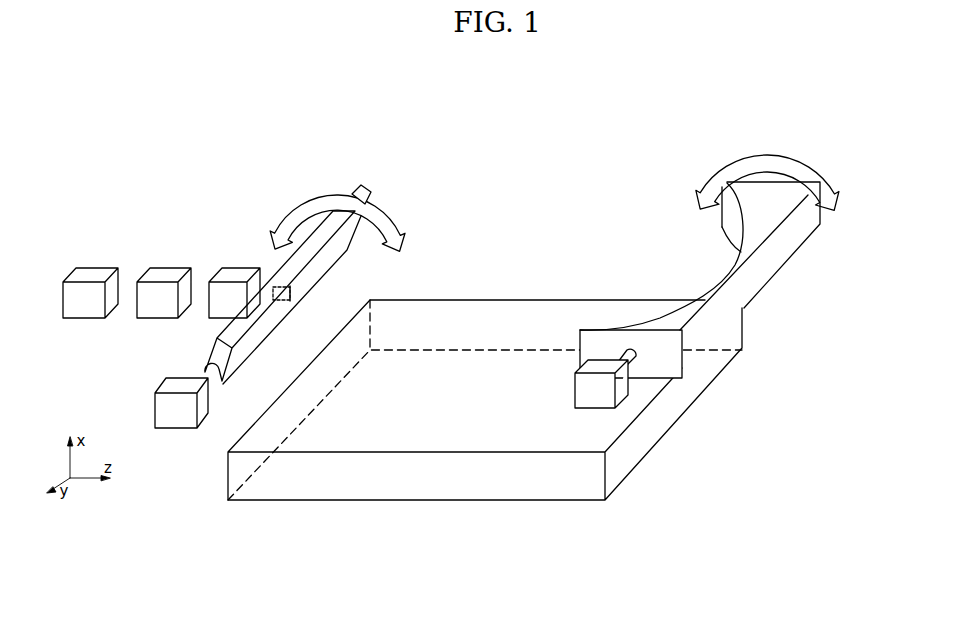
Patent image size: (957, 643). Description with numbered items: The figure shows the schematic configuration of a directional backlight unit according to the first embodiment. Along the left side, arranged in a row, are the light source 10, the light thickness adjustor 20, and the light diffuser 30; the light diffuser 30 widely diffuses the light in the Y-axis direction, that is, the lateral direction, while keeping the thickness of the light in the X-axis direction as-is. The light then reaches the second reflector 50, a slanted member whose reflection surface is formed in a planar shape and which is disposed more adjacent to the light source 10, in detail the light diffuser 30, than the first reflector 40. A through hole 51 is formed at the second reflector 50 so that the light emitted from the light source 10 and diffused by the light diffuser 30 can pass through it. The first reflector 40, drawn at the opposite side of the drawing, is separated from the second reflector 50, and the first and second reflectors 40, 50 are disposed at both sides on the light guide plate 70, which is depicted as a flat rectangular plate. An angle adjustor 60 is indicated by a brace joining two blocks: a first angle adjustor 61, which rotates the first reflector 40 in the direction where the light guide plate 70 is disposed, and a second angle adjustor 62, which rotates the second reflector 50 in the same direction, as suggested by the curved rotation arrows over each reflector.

The light source 10 is at (94, 275).
The light thickness adjustor 20 is at (168, 275).
The light diffuser 30 is at (237, 275).
The first reflector 40 is at (793, 240).
The second reflector 50 is at (358, 184).
The through hole 51 is at (292, 291).
The angle adjustor 60 is at (402, 558).
The first angle adjustor 61 is at (575, 398).
The second angle adjustor 62 is at (202, 407).
The light guide plate 70 is at (645, 448).